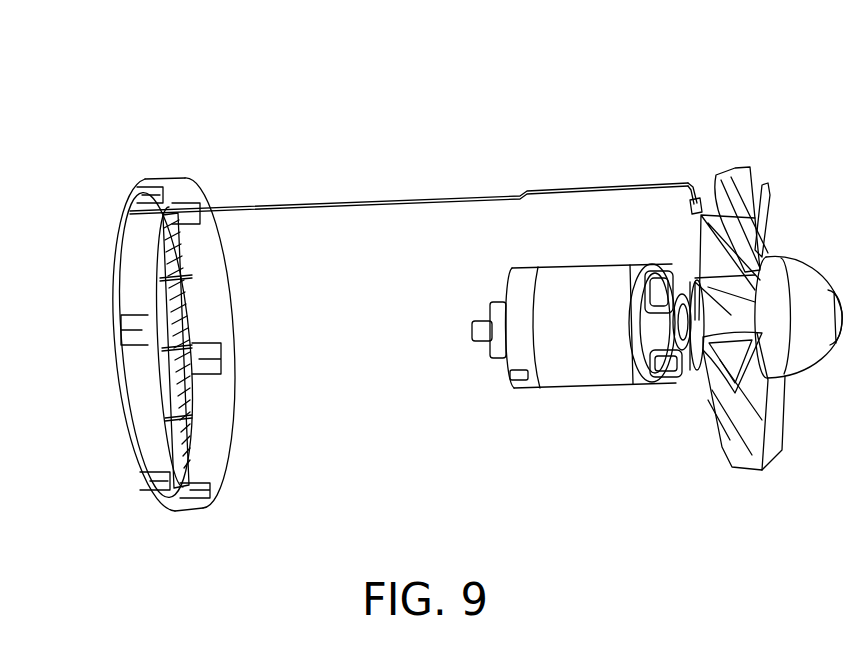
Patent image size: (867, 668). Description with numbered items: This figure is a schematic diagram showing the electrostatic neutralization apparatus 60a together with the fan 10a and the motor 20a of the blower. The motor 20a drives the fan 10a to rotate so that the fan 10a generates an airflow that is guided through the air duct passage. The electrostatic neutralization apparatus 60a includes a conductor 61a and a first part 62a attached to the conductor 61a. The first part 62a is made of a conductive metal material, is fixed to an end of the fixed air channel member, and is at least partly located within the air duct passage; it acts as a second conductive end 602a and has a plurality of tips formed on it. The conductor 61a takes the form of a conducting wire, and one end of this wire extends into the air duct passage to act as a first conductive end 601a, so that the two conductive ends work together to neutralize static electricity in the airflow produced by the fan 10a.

The electrostatic neutralization apparatus 60a is at (481, 146).
The first part 62a is at (172, 176).
The second conductive end 602a is at (133, 277).
The conductor 61a is at (556, 189).
The first conductive end 601a is at (695, 200).
The motor 20a is at (568, 391).
The fan 10a is at (741, 473).